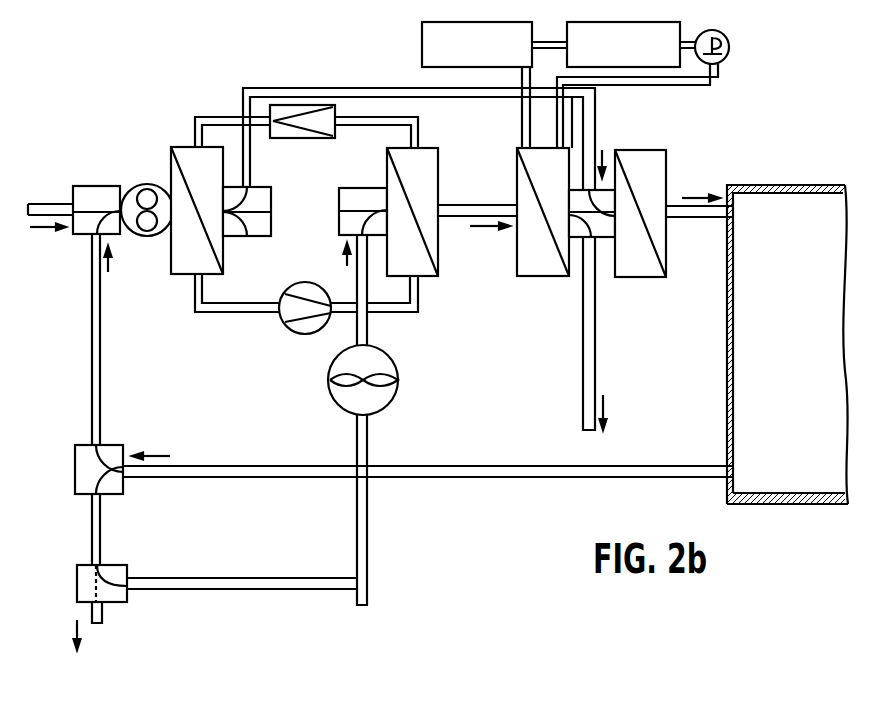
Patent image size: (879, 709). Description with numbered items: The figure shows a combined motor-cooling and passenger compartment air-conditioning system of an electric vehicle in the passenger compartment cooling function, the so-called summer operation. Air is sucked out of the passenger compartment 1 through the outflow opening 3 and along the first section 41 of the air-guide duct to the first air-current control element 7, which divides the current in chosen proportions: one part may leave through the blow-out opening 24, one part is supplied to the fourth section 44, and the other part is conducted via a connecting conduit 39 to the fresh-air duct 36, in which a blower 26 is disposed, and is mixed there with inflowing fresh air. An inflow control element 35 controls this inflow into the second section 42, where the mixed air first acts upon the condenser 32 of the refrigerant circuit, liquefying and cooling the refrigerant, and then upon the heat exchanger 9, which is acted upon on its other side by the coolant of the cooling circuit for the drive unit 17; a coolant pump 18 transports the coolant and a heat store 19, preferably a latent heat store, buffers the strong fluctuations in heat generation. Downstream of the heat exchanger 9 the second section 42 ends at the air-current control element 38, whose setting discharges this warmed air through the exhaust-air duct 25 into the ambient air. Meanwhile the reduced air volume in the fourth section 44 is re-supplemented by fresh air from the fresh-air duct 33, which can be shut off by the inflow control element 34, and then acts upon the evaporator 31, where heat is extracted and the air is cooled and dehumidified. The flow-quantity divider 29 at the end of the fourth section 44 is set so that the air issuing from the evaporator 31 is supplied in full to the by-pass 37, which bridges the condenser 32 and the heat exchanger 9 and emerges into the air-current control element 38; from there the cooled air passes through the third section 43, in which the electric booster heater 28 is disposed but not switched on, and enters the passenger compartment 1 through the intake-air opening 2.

The passenger compartment 1 is at (802, 320).
The intake-air opening 2 is at (733, 211).
The outflow opening 3 is at (733, 473).
The first air-current control element 7 is at (75, 473).
The heat exchanger 9 is at (548, 268).
The drive unit 17 is at (635, 58).
The coolant pump 18 is at (730, 45).
The heat store 19 is at (490, 58).
The blow-out opening 24 is at (78, 607).
The exhaust-air duct 25 is at (598, 352).
The blower 26 is at (385, 362).
The electric booster heater 28 is at (655, 158).
The flow-quantity divider 29 is at (262, 200).
The evaporator 31 is at (175, 168).
The condenser 32 is at (437, 240).
The fresh-air duct 33 is at (47, 203).
The inflow control element 34 is at (90, 187).
The inflow control element 35 is at (340, 228).
The fresh-air duct 36 is at (368, 443).
The by-pass 37 is at (357, 87).
The air-current control element 38 is at (603, 234).
The connecting conduit 39 is at (240, 589).
The first section 41 is at (451, 479).
The second section 42 is at (460, 205).
The third section 43 is at (693, 222).
The fourth section 44 is at (100, 374).